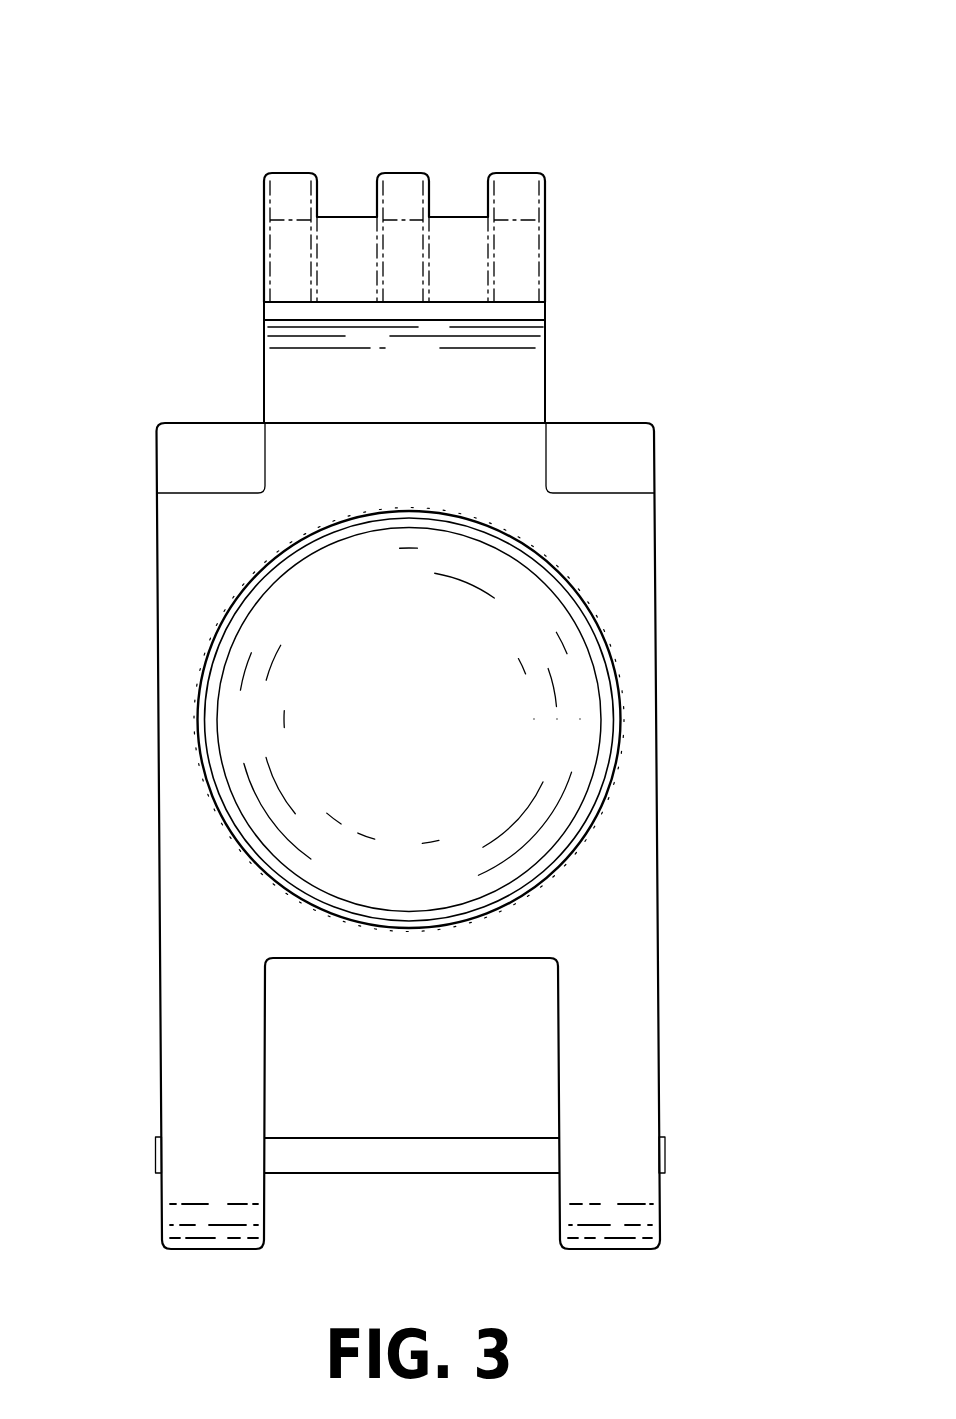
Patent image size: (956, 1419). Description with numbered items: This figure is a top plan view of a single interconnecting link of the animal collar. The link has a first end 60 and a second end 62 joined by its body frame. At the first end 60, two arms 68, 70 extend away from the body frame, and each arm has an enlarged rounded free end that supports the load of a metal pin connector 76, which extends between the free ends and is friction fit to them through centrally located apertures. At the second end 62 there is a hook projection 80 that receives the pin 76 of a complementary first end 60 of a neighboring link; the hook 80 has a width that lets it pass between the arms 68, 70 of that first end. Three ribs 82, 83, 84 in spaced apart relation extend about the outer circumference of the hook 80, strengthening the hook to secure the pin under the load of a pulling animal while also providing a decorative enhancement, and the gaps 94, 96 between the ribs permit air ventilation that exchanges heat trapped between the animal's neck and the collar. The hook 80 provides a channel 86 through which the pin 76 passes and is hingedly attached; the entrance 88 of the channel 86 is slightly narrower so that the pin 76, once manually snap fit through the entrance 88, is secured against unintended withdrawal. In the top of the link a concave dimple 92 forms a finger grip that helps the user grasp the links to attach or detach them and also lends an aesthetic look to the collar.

The first end 60 is at (697, 1048).
The second end 62 is at (622, 262).
The arm 68 is at (160, 1080).
The arm 70 is at (628, 997).
The metal pin connector 76 is at (392, 1175).
The hook projection 80 is at (545, 272).
The rib 82 is at (316, 174).
The rib 83 is at (431, 174).
The rib 84 is at (544, 174).
The channel 86 is at (545, 328).
The entrance 88 is at (263, 313).
The concave dimple 92 is at (570, 700).
The gap 94 is at (346, 216).
The gap 96 is at (465, 216).